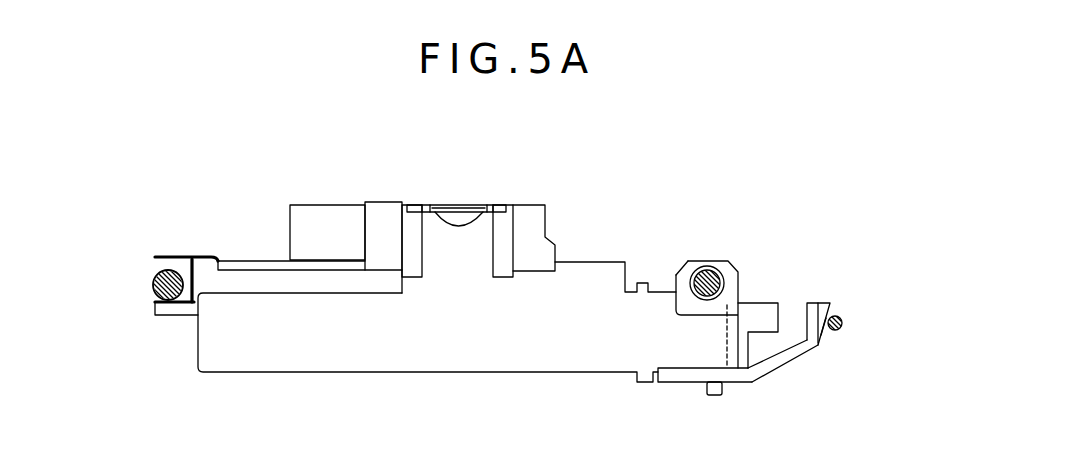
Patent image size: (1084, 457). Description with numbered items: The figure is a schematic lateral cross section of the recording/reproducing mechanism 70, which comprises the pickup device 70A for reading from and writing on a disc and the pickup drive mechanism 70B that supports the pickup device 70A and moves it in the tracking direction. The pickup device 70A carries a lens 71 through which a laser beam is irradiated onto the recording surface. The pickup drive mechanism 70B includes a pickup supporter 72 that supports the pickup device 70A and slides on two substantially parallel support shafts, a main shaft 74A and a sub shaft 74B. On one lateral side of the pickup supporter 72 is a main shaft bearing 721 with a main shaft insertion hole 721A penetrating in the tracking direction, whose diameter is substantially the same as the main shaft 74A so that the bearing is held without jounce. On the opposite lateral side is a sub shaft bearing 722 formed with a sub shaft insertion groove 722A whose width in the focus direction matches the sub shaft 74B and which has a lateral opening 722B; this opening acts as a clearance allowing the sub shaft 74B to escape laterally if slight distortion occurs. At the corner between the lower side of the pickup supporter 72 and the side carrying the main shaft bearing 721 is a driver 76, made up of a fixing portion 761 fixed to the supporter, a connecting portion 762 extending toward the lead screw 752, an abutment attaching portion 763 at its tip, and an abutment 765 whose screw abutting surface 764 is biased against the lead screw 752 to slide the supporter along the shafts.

The recording/reproducing mechanism 70 is at (672, 152).
The pickup device 70A is at (373, 201).
The pickup drive mechanism 70B is at (602, 219).
The lens 71 is at (468, 204).
The pickup supporter 72 is at (308, 372).
The sub shaft bearing 722 is at (172, 246).
The sub shaft insertion groove 722A is at (184, 266).
The opening 722B is at (147, 271).
The sub shaft 74B is at (152, 293).
The main shaft bearing 721 is at (678, 283).
The main shaft insertion hole 721A is at (687, 260).
The main shaft 74A is at (703, 275).
The driver 76 is at (772, 340).
The fixing portion 761 is at (717, 374).
The connecting portion 762 is at (790, 362).
The abutment attaching portion 763 is at (808, 320).
The screw abutting surface 764 is at (842, 322).
The abutment 765 is at (830, 302).
The lead screw 752 is at (839, 331).